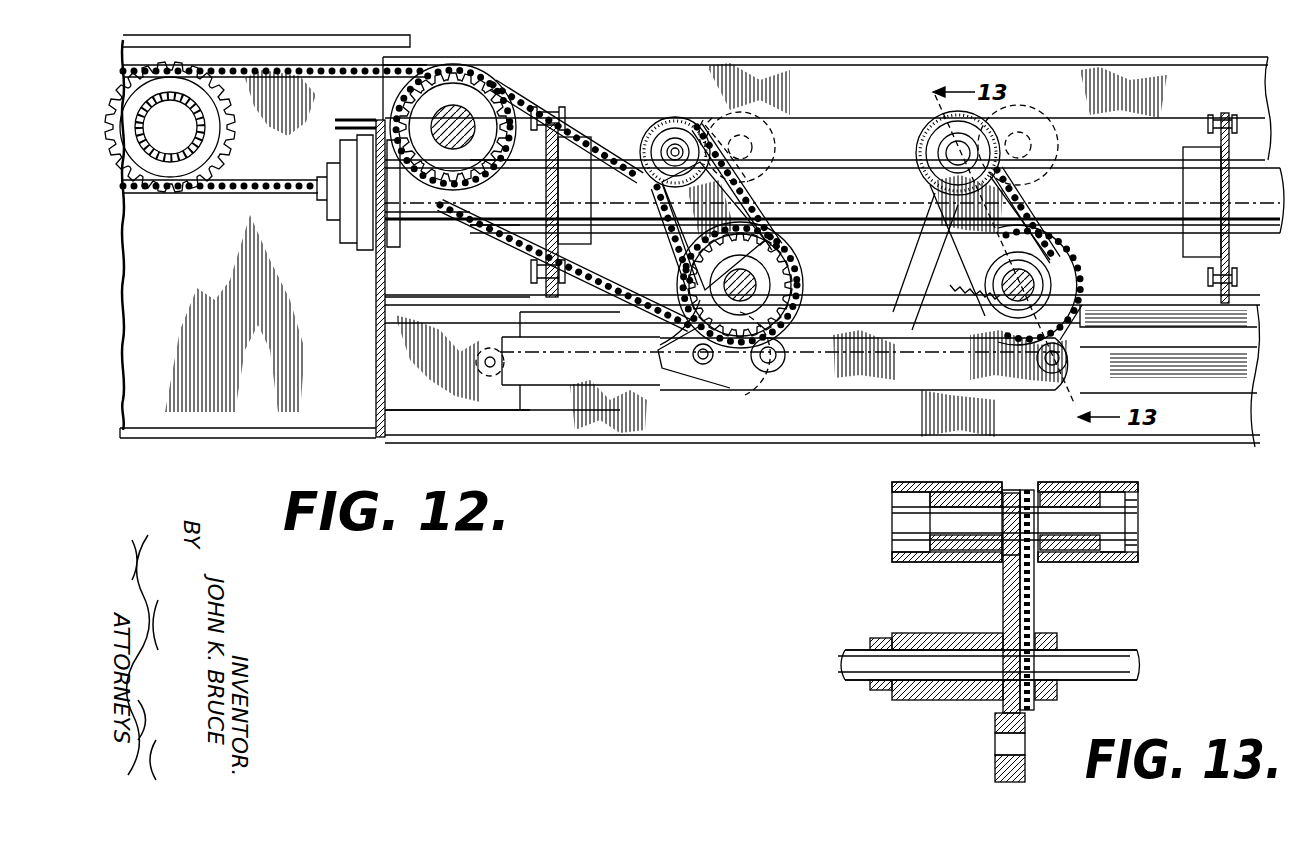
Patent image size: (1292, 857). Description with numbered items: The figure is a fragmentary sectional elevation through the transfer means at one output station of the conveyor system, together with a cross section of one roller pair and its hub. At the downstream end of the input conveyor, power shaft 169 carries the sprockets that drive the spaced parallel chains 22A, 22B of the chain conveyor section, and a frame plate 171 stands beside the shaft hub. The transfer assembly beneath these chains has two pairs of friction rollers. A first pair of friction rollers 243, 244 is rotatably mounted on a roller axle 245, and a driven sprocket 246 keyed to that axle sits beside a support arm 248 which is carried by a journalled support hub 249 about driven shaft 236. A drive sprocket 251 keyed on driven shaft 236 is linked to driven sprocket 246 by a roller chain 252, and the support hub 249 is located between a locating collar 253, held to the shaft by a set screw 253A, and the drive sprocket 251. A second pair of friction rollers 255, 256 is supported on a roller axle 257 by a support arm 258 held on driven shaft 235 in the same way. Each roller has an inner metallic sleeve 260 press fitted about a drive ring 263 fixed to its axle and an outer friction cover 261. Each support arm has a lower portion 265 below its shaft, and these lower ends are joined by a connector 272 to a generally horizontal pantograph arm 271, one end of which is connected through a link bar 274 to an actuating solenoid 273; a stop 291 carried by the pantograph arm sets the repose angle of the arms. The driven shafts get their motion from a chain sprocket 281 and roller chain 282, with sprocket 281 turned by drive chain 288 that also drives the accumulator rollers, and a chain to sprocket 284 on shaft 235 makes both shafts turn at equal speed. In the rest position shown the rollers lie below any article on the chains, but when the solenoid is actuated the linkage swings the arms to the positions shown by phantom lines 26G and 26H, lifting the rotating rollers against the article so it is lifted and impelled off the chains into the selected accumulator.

In FIG. 12, the drive chain 288 is at (328, 65).
In FIG. 12, the drive sprocket 281 is at (513, 100).
In FIG. 12, the roller chain 282 is at (548, 108).
In FIG. 12, the chain of the chain conveyor 22B is at (558, 130).
In FIG. 12, the chain of the chain conveyor 22A is at (1224, 115).
In FIG. 12, the friction roller 243 is at (670, 117).
In FIG. 12, the friction roller 244 is at (703, 120).
In FIG. 12, the roller axle 245 is at (658, 148).
In FIG. 12, the driven sprocket 246 is at (713, 118).
In FIG. 12, the phantom lines 26H is at (770, 122).
In FIG. 12, the phantom lines 26G is at (1020, 105).
In FIG. 12, the driven shaft 236 is at (745, 282).
In FIG. 12, the support arm 248 is at (690, 222).
In FIG. 12, the roller chain 252 is at (762, 192).
In FIG. 13, the roller chain 252 is at (1034, 592).
In FIG. 12, the drive sprocket 251 is at (703, 252).
In FIG. 13, the drive sprocket 251 is at (1058, 641).
In FIG. 12, the power shaft 169 is at (510, 204).
In FIG. 12, the friction roller 256 is at (928, 135).
In FIG. 13, the friction roller 256 is at (960, 482).
In FIG. 12, the support arm 258 is at (1005, 188).
In FIG. 13, the support arm 258 is at (1003, 600).
In FIG. 12, the sprocket 284 is at (948, 290).
In FIG. 12, the stop 291 is at (935, 262).
In FIG. 12, the driven shaft 235 is at (1022, 280).
In FIG. 13, the driven shaft 235 is at (842, 668).
In FIG. 12, the locating collar 253 is at (1048, 288).
In FIG. 13, the locating collar 253 is at (872, 690).
In FIG. 12, the lower portion of support arm 265 is at (1085, 312).
In FIG. 13, the lower portion of support arm 265 is at (995, 770).
In FIG. 12, the support hub 249 is at (1052, 345).
In FIG. 13, the support hub 249 is at (940, 696).
In FIG. 12, the pantograph arm 271 is at (830, 378).
In FIG. 13, the pantograph arm 271 is at (1025, 724).
In FIG. 12, the frame plate 171 is at (376, 356).
In FIG. 12, the actuating solenoid 273 is at (428, 402).
In FIG. 12, the link bar 274 is at (552, 362).
In FIG. 13, the friction roller 255 is at (1108, 486).
In FIG. 13, the drive ring 263 is at (908, 500).
In FIG. 13, the inner metallic sleeve 260 is at (908, 546).
In FIG. 13, the outer friction cover 261 is at (905, 562).
In FIG. 13, the roller axle 257 is at (1000, 524).
In FIG. 13, the set screw 253A is at (872, 638).
In FIG. 13, the connector 272 is at (995, 746).